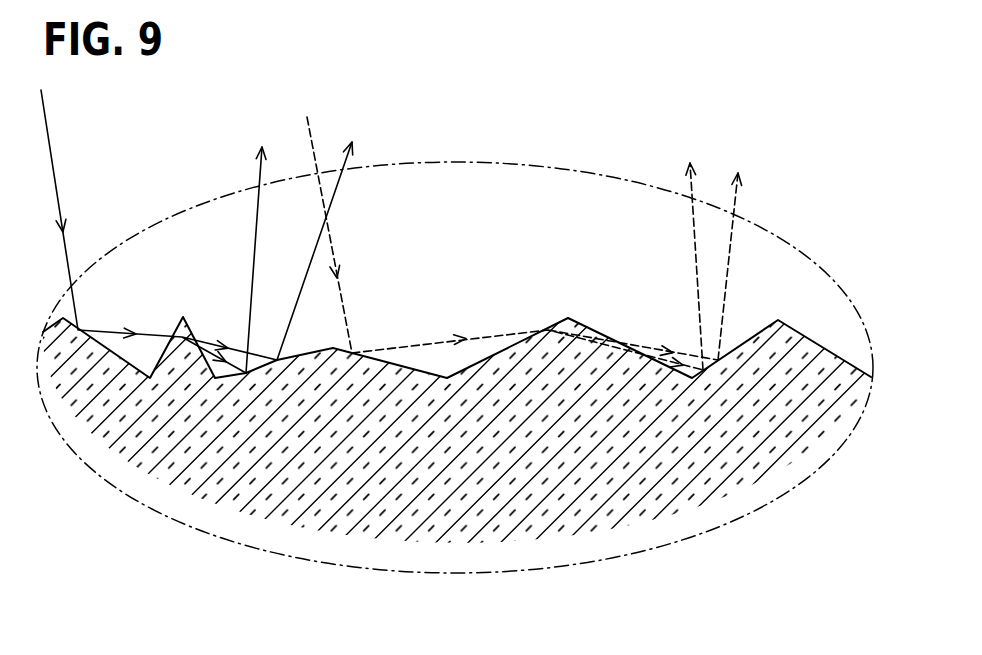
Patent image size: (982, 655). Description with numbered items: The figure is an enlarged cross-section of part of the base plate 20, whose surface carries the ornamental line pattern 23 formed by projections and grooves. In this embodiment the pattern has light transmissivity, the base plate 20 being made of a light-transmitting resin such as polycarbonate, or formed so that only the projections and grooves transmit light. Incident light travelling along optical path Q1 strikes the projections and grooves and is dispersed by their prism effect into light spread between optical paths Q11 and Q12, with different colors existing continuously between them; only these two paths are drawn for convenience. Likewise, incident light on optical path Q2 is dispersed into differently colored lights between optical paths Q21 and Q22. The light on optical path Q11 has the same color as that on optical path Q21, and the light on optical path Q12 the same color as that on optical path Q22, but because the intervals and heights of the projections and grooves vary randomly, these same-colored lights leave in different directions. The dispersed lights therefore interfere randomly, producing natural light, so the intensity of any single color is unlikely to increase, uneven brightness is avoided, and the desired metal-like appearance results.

The base plate 20 is at (512, 553).
The ornamental line pattern 23 is at (813, 342).
The optical path Q1 is at (47, 127).
The optical path Q11 is at (257, 203).
The optical path Q12 is at (338, 187).
The optical path Q2 is at (308, 130).
The optical path Q21 is at (692, 214).
The optical path Q22 is at (732, 238).